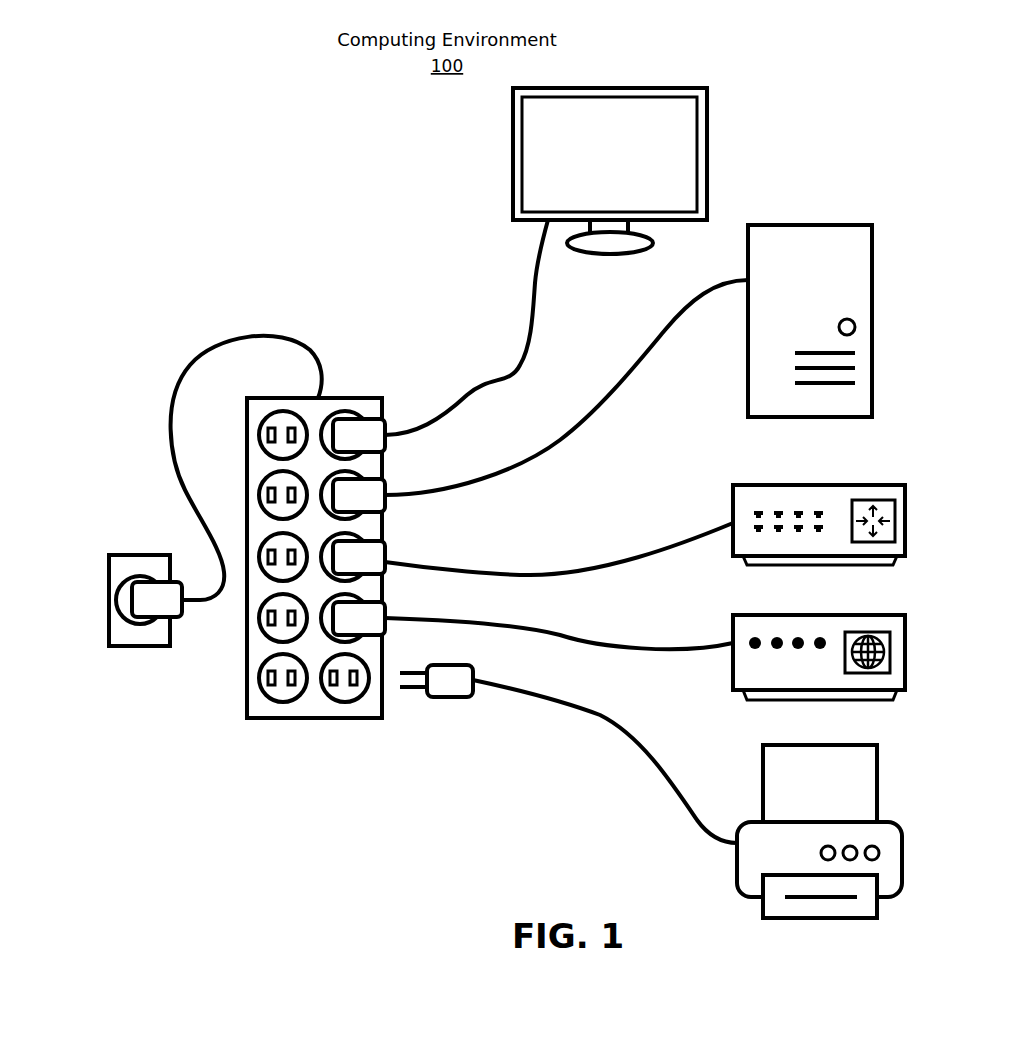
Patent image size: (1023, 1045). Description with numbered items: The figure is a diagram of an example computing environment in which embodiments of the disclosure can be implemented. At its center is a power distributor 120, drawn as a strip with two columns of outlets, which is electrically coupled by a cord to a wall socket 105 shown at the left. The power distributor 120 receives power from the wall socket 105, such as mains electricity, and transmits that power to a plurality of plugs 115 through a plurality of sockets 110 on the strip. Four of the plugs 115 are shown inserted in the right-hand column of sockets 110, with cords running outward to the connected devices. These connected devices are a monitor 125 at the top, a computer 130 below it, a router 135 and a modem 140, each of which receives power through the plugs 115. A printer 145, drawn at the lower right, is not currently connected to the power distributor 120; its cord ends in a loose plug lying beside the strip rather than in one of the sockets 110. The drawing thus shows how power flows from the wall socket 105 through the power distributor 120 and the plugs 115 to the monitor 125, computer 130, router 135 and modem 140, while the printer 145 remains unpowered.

The wall socket 105 is at (140, 555).
The sockets 110 is at (253, 627).
The plugs 115 is at (385, 490).
The power distributor 120 is at (352, 720).
The monitor 125 is at (705, 88).
The computer 130 is at (872, 228).
The router 135 is at (905, 487).
The modem 140 is at (905, 617).
The printer 145 is at (902, 825).